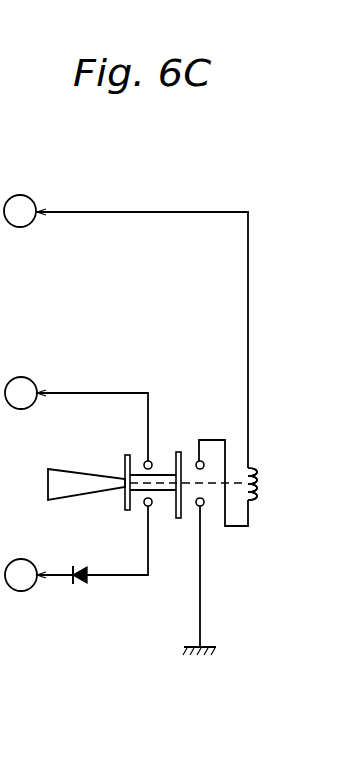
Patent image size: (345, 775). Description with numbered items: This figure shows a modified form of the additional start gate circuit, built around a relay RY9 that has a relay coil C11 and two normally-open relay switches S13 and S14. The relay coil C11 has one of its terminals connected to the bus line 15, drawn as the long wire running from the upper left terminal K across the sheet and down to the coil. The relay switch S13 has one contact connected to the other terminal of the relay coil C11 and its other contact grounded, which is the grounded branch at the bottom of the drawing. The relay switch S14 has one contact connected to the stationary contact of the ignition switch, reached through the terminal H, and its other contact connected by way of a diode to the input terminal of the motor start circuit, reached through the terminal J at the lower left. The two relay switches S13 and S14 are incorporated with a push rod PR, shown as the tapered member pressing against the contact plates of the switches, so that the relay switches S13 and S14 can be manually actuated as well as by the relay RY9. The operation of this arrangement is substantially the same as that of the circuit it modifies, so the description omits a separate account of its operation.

The bus line 15 is at (146, 212).
The push rod PR is at (78, 474).
The relay switch S14 is at (125, 505).
The relay switch S13 is at (177, 518).
The relay RY9 is at (193, 461).
The relay coil C11 is at (256, 490).
The terminal K is at (20, 211).
The terminal H is at (21, 393).
The terminal J is at (21, 575).